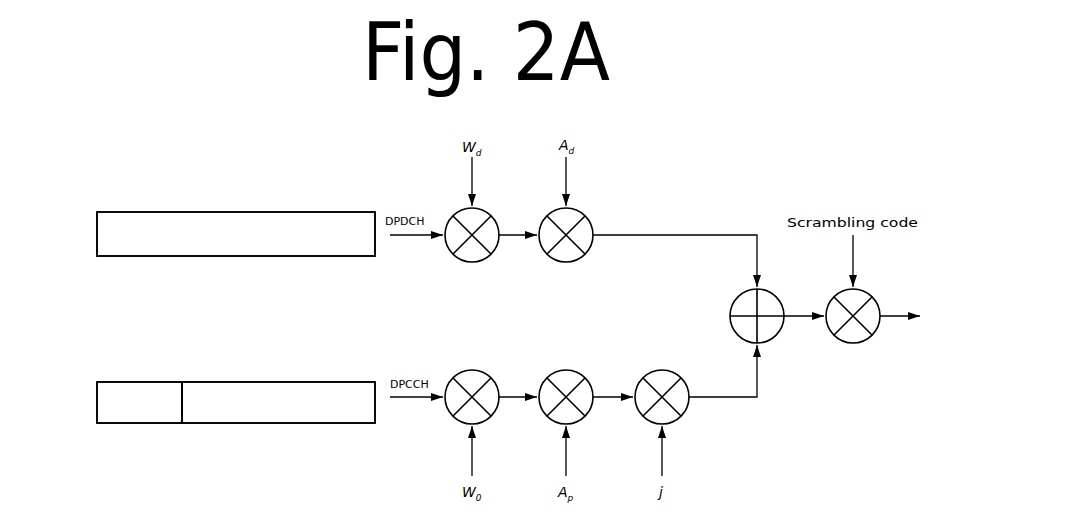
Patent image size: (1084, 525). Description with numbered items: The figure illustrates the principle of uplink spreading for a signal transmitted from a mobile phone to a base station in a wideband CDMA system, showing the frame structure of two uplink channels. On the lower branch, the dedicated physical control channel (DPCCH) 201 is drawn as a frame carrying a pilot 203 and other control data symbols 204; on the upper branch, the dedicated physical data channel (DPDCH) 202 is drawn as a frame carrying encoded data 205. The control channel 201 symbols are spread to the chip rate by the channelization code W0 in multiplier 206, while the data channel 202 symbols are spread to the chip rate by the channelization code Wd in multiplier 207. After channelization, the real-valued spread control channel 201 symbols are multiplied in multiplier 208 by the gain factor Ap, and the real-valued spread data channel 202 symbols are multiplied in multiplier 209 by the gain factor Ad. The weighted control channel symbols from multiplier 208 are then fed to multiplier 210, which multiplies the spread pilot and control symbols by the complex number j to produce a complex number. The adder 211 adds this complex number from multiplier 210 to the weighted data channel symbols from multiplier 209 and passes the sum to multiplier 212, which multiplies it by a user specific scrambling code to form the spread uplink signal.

The dedicated physical control channel (DPCCH) 201 is at (70, 393).
The dedicated physical data channel (DPDCH) 202 is at (70, 223).
The pilot 203 is at (137, 378).
The control data symbols 204 is at (265, 380).
The encoded data 205 is at (260, 213).
The multiplier 206 is at (467, 372).
The multiplier 207 is at (448, 222).
The multiplier 208 is at (545, 380).
The multiplier 209 is at (583, 213).
The multiplier 210 is at (638, 392).
The adder 211 is at (738, 298).
The multiplier 212 is at (825, 302).